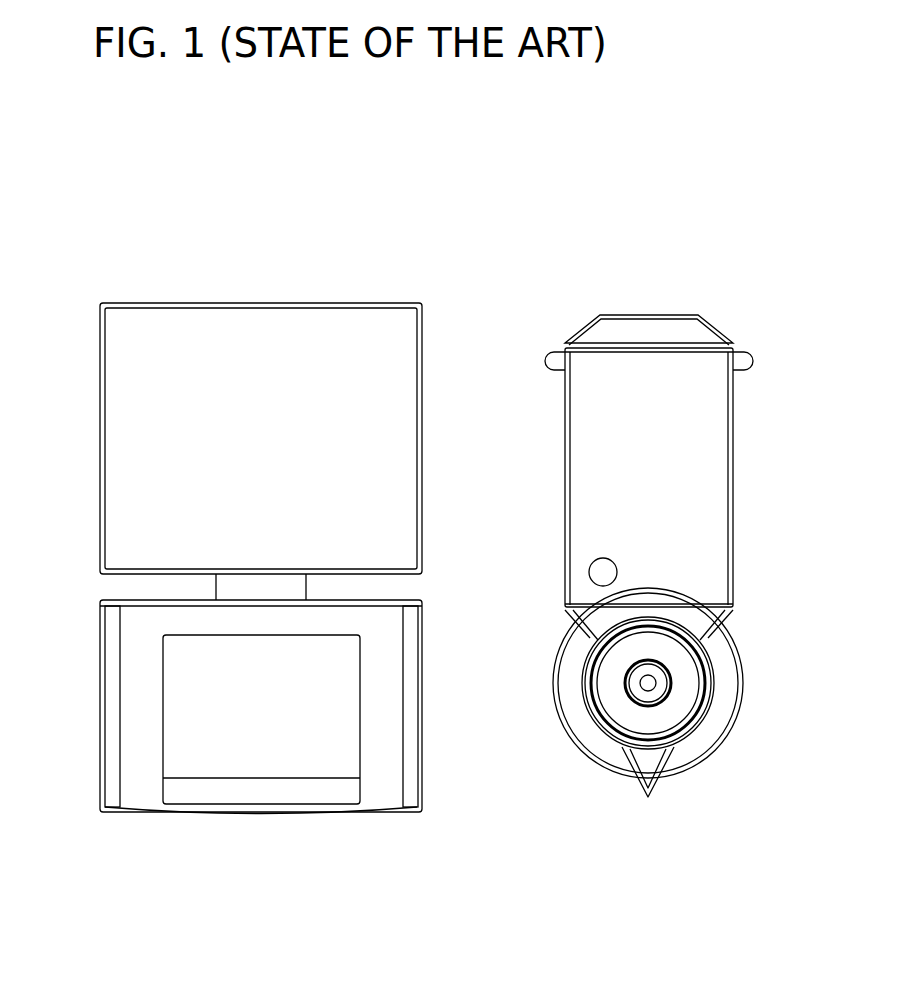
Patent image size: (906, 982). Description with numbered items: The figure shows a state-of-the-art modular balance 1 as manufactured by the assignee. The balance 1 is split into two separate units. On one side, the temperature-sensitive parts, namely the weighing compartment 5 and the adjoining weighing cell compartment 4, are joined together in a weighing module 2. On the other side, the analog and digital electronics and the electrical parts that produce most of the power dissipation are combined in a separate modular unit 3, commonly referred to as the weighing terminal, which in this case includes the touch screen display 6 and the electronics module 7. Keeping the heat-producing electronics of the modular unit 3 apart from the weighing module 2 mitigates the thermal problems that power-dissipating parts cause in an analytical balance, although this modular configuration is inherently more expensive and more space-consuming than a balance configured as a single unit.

The balance 1 is at (187, 183).
The weighing module 2 is at (660, 310).
The modular unit 3 is at (312, 286).
The weighing cell compartment 4 is at (672, 460).
The weighing compartment 5 is at (667, 668).
The touch screen display 6 is at (237, 714).
The electronics module 7 is at (250, 445).